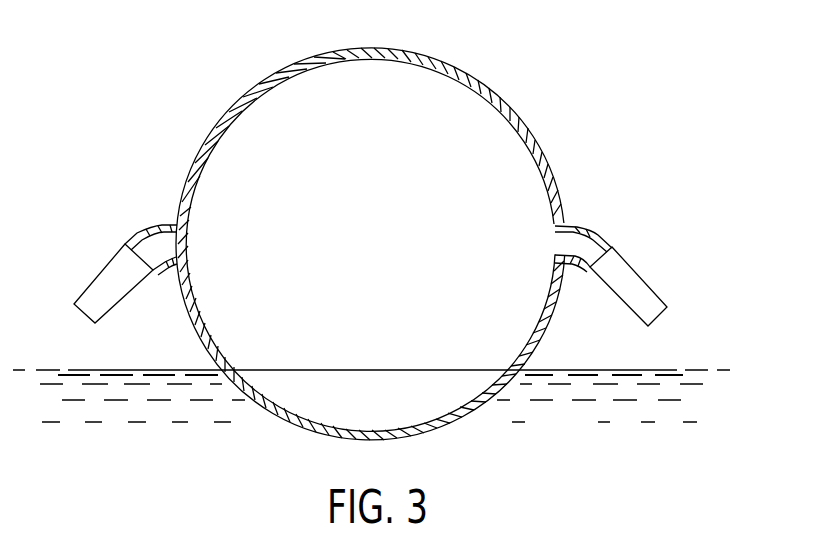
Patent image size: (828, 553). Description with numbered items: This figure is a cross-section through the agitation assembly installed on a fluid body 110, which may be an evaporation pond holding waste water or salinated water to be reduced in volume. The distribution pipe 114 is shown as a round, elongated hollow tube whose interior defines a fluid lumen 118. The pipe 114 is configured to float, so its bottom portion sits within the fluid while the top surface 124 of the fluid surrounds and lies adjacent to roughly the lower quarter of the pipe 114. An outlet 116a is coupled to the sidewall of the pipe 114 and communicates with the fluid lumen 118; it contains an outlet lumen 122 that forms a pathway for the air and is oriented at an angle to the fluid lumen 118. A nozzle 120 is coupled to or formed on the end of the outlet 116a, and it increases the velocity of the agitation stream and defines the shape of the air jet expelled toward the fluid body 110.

The distribution pipe 114 is at (533, 133).
The fluid lumen 118 is at (440, 178).
The outlet 116a is at (583, 250).
The outlet lumen 122 is at (600, 233).
The nozzle 120 is at (640, 290).
The top surface of the fluid 124 is at (570, 366).
The fluid body 110 is at (575, 428).